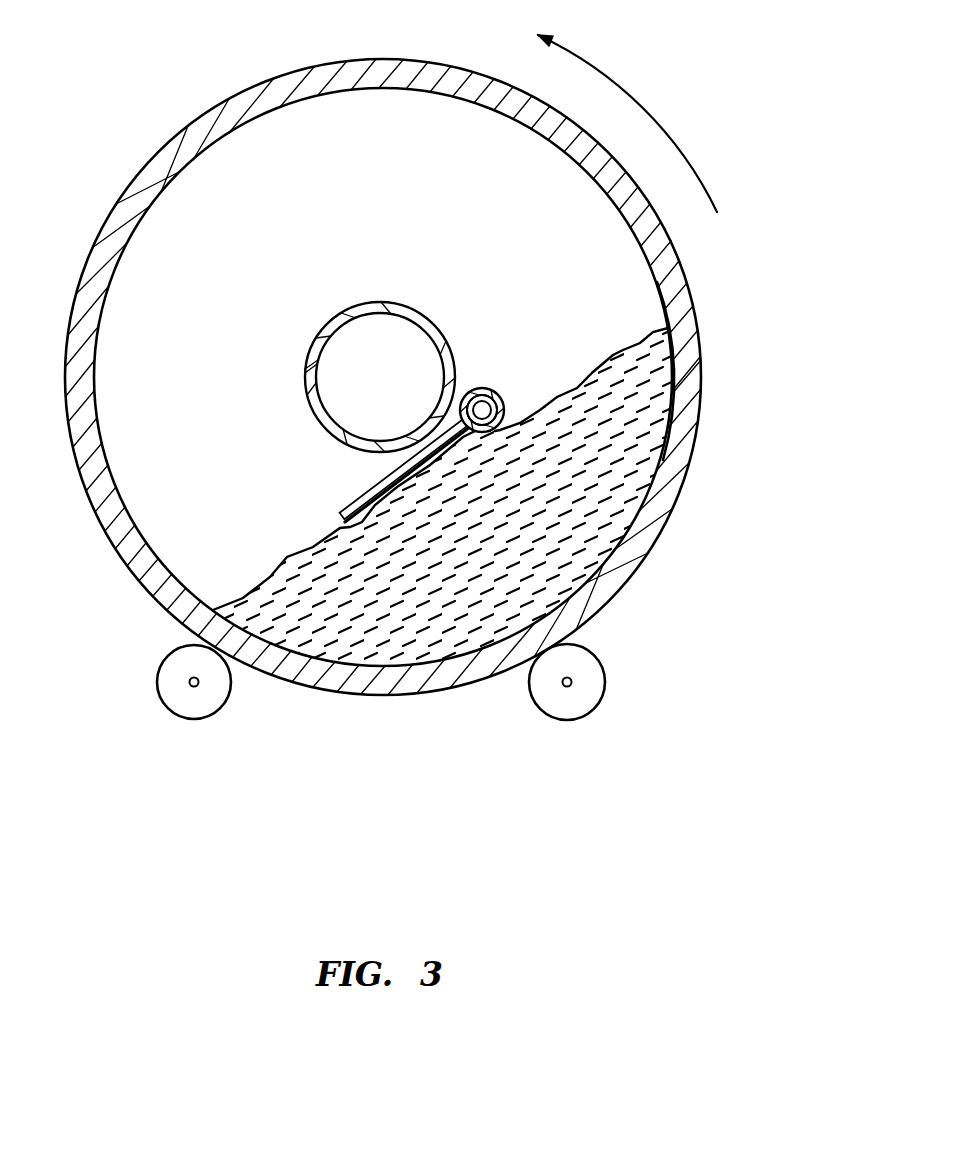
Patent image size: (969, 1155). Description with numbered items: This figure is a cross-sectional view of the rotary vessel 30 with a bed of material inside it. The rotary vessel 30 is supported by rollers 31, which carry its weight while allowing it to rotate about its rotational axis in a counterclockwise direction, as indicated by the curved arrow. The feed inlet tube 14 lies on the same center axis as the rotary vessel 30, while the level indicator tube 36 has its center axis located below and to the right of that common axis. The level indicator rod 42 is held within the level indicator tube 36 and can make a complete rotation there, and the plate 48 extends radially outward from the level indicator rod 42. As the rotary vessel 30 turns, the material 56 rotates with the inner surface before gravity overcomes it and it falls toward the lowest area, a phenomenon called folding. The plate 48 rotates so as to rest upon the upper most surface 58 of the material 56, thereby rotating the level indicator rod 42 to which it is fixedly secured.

The rotary vessel 30 is at (167, 141).
The feed inlet tube 14 is at (357, 308).
The level indicator tube 36 is at (479, 388).
The level indicator rod 42 is at (500, 403).
The plate 48 is at (343, 505).
The material 56 is at (653, 424).
The upper most surface 58 is at (275, 575).
The roller 31 is at (170, 668).